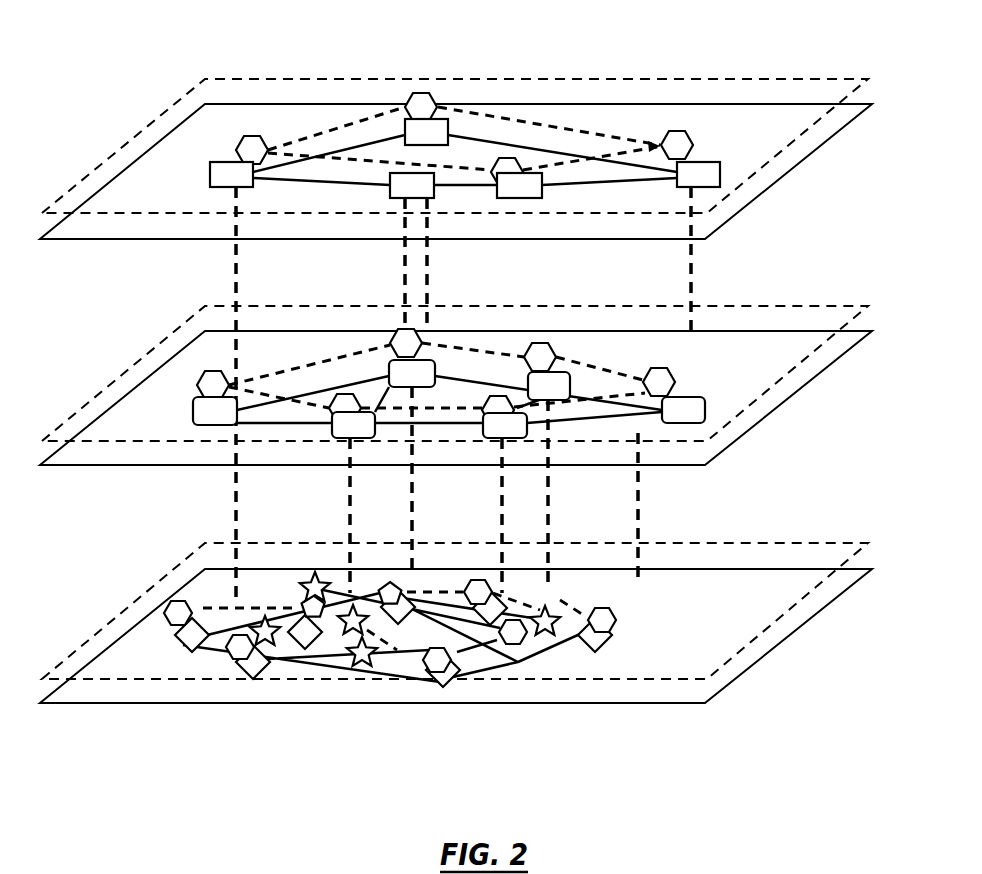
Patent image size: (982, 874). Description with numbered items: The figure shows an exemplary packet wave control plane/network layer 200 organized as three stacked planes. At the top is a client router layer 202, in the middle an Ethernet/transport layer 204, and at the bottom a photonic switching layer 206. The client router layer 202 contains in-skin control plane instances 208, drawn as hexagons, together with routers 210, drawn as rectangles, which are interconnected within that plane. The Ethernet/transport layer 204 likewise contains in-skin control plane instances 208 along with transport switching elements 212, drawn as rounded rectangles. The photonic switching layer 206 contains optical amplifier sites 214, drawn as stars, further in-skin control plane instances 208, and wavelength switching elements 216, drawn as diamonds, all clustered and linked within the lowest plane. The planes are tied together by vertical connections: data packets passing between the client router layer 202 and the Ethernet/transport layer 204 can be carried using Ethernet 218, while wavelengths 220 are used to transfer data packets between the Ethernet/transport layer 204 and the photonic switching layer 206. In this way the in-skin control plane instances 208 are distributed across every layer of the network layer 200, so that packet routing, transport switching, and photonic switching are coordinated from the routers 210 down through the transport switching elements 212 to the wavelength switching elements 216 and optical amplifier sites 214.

The packet wave control plane/network layer 200 is at (603, 46).
The client router layer 202 is at (788, 104).
The Ethernet/transport layer 204 is at (793, 332).
The photonic switching layer 206 is at (792, 569).
The in-skin control plane instances 208 is at (677, 131).
The routers 210 is at (388, 192).
The transport switching elements 212 is at (692, 397).
The optical amplifier sites 214 is at (548, 617).
The wavelength switching elements 216 is at (234, 676).
The Ethernet 218 is at (693, 295).
The wavelengths 220 is at (573, 490).